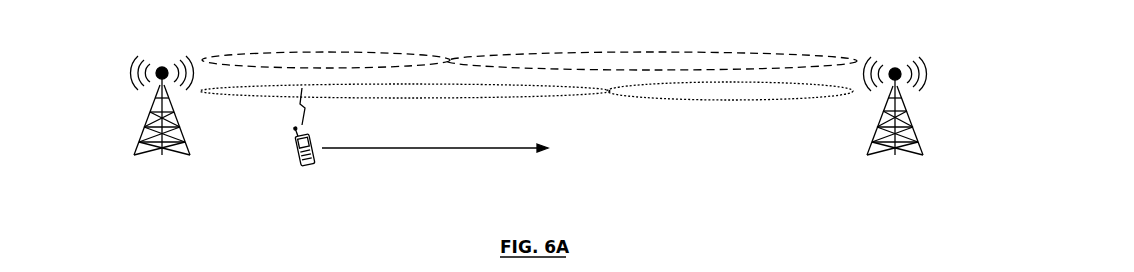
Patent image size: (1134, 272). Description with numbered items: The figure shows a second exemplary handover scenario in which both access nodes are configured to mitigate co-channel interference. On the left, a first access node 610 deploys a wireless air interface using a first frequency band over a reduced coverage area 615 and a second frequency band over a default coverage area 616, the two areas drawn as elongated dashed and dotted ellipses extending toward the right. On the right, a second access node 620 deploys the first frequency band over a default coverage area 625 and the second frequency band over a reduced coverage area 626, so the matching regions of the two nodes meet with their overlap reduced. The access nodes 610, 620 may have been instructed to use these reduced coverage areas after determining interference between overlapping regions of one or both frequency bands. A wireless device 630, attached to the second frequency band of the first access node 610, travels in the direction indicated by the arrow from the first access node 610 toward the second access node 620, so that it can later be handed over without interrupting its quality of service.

The first access node 610 is at (143, 138).
The second access node 620 is at (912, 136).
The reduced coverage area 615 is at (258, 53).
The default coverage area 616 is at (258, 98).
The default coverage area 625 is at (803, 53).
The reduced coverage area 626 is at (803, 99).
The wireless device 630 is at (298, 167).